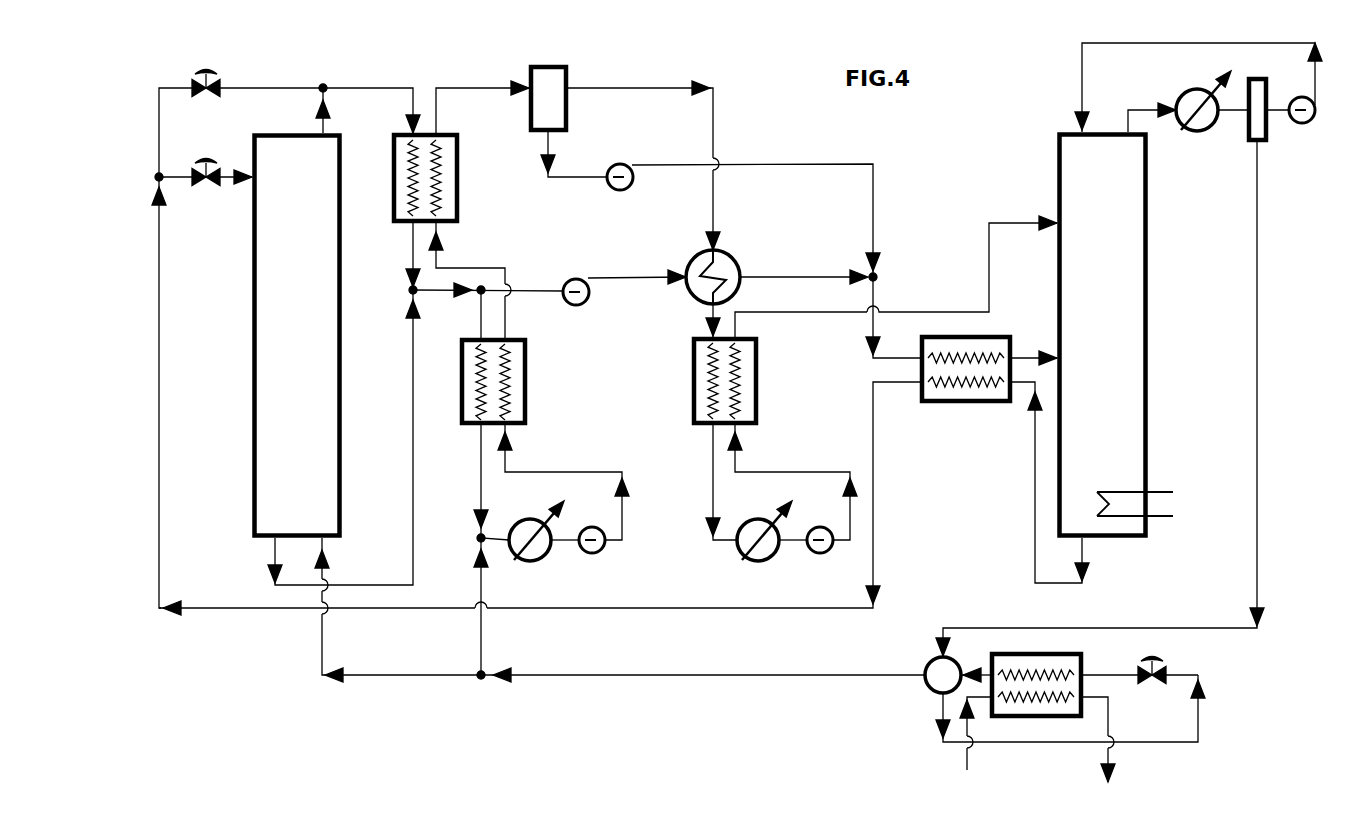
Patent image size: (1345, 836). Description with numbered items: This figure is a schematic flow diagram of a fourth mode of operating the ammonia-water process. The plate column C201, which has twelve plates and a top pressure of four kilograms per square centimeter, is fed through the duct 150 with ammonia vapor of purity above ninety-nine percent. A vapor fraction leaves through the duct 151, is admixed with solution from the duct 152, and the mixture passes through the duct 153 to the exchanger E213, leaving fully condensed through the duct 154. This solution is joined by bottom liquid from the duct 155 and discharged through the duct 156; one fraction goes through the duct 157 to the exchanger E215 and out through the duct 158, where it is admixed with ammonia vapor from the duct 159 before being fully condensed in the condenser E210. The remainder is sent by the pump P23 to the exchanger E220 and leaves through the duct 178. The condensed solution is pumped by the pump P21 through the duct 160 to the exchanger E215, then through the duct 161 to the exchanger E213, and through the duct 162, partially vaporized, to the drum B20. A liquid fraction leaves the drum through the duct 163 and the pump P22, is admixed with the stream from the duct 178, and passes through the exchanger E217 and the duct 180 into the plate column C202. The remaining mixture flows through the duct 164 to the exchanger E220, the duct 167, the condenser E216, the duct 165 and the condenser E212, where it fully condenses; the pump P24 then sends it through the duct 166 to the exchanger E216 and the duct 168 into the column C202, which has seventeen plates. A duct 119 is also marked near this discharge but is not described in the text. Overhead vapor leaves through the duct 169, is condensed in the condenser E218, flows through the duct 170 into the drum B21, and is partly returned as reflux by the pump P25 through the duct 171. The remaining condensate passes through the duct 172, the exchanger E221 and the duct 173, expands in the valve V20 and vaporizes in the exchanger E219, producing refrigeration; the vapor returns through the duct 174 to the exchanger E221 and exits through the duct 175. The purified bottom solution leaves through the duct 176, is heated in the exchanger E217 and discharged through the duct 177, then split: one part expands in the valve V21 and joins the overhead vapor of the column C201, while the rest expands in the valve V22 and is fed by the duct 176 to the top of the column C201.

The plate column C201 is at (297, 336).
The plate column C202 is at (1117, 335).
The exchanger E213 is at (462, 197).
The exchanger E215 is at (530, 396).
The condenser E216 is at (760, 383).
The exchanger E217 is at (965, 410).
The exchanger E219 is at (1083, 663).
The exchanger E220 is at (738, 262).
The exchanger E221 is at (932, 692).
The condenser E210 is at (513, 555).
The condenser E212 is at (745, 556).
The condenser E218 is at (1197, 132).
The pump P21 is at (591, 554).
The pump P22 is at (618, 191).
The pump P23 is at (582, 306).
The pump P24 is at (816, 554).
The pump P25 is at (1302, 124).
The drum B20 is at (568, 122).
The drum B21 is at (1247, 142).
The valve V20 is at (1152, 684).
The valve V21 is at (204, 97).
The valve V22 is at (205, 186).
The line 119 is at (828, 312).
The duct 150 is at (325, 640).
The duct 151 is at (330, 128).
The duct 152 is at (263, 88).
The duct 153 is at (353, 88).
The duct 154 is at (411, 257).
The duct 155 is at (380, 585).
The duct 156 is at (442, 292).
The duct 157 is at (478, 318).
The duct 158 is at (481, 462).
The duct 159 is at (481, 640).
The duct 160 is at (595, 472).
The duct 161 is at (495, 268).
The duct 162 is at (459, 88).
The duct 163 is at (567, 181).
The duct 164 is at (640, 88).
The duct 165 is at (713, 460).
The duct 166 is at (795, 472).
The duct 167 is at (708, 312).
The duct 168 is at (909, 312).
The duct 169 is at (1137, 110).
The duct 170 is at (1227, 102).
The duct 171 is at (1082, 82).
The duct 172 is at (1180, 628).
The duct 173 is at (943, 742).
The duct 174 is at (972, 664).
The duct 175 is at (825, 675).
The duct 176 is at (225, 165).
The duct 177 is at (875, 510).
The duct 178 is at (828, 275).
The duct 180 is at (1027, 345).